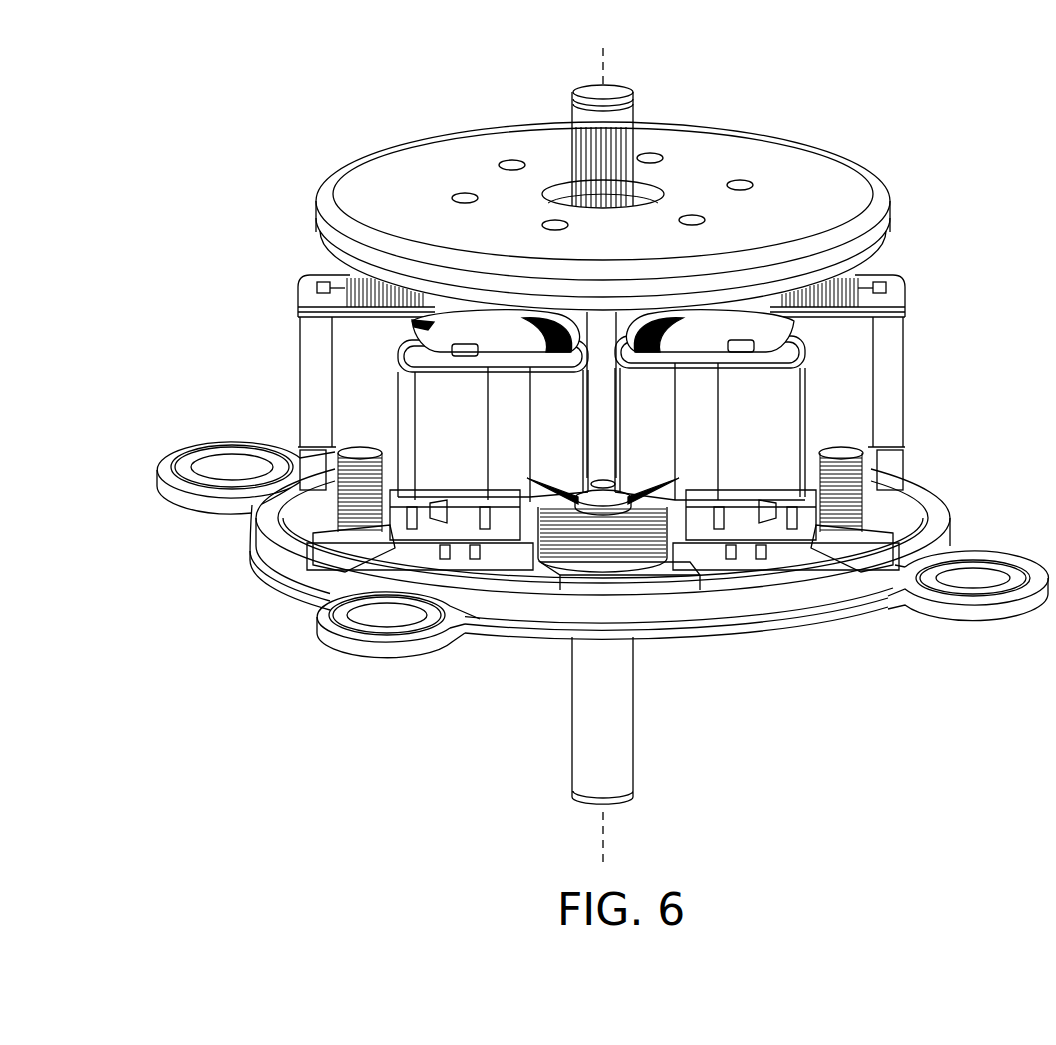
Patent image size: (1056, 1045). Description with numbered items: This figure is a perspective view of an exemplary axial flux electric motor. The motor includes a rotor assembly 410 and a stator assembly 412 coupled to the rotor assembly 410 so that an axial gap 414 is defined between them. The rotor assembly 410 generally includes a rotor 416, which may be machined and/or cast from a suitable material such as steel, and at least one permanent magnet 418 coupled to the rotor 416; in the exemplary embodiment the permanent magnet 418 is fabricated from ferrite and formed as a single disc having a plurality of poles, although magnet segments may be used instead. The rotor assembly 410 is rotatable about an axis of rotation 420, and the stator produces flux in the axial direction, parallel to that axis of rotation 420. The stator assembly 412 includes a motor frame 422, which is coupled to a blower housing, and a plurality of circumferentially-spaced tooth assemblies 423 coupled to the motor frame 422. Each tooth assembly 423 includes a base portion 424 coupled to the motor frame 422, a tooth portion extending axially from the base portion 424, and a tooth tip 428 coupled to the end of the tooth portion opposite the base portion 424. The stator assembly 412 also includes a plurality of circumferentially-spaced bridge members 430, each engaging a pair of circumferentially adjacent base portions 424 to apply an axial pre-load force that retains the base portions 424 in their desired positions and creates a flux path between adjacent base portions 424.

The rotor assembly 410 is at (262, 168).
The stator assembly 412 is at (264, 380).
The axial gap 414 is at (918, 231).
The rotor 416 is at (826, 178).
The permanent magnet 418 is at (836, 282).
The axis of rotation 420 is at (606, 68).
The motor frame 422 is at (932, 505).
The tooth assembly 423 is at (410, 320).
The base portion 424 is at (718, 553).
The tooth tip 428 is at (795, 337).
The bridge member 430 is at (832, 518).